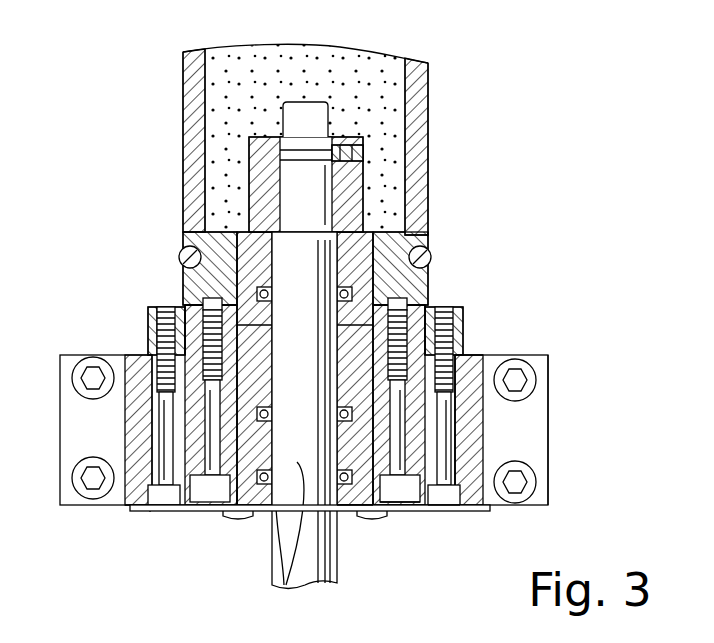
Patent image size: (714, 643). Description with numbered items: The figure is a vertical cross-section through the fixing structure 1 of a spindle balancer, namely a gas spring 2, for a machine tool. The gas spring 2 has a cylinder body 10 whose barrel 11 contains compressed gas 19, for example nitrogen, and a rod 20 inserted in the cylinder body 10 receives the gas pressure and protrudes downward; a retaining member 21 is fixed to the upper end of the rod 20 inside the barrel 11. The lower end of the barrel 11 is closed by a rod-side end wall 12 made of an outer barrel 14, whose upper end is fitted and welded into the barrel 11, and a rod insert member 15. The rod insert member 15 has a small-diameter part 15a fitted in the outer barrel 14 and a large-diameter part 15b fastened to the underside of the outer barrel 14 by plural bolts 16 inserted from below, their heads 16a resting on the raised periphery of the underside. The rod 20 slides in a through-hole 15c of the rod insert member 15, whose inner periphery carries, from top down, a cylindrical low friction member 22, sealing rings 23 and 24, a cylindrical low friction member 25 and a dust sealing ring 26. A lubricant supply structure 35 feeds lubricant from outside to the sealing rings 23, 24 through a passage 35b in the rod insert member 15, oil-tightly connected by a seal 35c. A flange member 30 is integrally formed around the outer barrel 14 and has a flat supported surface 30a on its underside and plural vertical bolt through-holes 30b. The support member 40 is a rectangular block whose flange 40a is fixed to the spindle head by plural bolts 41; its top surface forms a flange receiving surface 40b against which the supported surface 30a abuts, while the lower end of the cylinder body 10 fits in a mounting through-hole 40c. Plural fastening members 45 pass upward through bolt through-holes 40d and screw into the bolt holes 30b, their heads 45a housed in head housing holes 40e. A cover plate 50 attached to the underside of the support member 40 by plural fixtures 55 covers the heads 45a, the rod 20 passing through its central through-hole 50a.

The fixing structure 1 is at (488, 301).
The gas spring 2 is at (480, 66).
The cylinder body 10 is at (432, 132).
The barrel 11 is at (190, 107).
The rod-side end wall 12 is at (434, 272).
The outer barrel 14 is at (245, 276).
The rod insert member 15 is at (222, 236).
The small-diameter part 15a is at (180, 257).
The large-diameter part 15b is at (236, 492).
The through-hole 15c is at (283, 510).
The bolts 16 is at (203, 496).
The heads 16a is at (213, 503).
The compressed gas 19 is at (253, 60).
The rod 20 is at (337, 570).
The retaining member 21 is at (350, 168).
The cylindrical low friction member 22 is at (426, 244).
The sealing ring 23 is at (352, 293).
The sealing ring 24 is at (440, 488).
The cylindrical low friction member 25 is at (413, 482).
The dust sealing ring 26 is at (352, 512).
The flange member 30 is at (148, 333).
The supported surface 30a is at (485, 368).
The bolt through-holes 30b is at (450, 325).
The lubricant supply structure 35 is at (212, 388).
The passage 35b is at (446, 340).
The seal 35c is at (398, 358).
The support member 40 is at (552, 406).
The flange 40a is at (548, 440).
The flange receiving surface 40b is at (155, 315).
The mounting through-hole 40c is at (140, 492).
The bolt through-holes 40d is at (447, 433).
The head housing holes 40e is at (152, 506).
The bolts 41 is at (90, 378).
The fastening members 45 is at (163, 452).
The heads 45a is at (166, 506).
The cover plate 50 is at (490, 511).
The through-hole 50a is at (275, 512).
The fixtures 55 is at (379, 512).